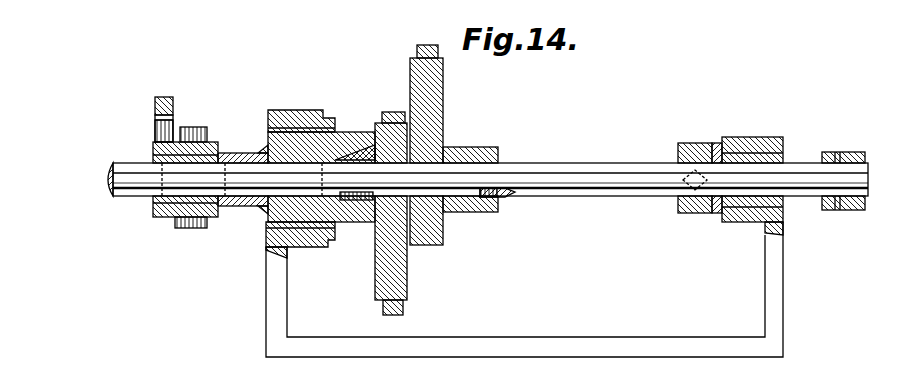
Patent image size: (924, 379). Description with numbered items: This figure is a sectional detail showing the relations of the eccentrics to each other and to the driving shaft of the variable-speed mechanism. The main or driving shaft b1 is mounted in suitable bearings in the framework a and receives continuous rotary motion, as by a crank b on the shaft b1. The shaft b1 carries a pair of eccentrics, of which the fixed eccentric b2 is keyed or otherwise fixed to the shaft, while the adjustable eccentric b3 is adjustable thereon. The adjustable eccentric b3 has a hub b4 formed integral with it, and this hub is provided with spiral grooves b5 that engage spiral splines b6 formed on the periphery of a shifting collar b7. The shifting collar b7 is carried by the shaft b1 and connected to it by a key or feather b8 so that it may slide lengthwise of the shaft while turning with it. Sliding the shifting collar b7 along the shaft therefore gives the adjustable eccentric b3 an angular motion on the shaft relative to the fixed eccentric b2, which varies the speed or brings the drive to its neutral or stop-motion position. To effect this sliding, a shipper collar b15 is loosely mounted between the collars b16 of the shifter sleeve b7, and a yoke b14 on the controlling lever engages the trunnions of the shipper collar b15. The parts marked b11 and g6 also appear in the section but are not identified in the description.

The framework a is at (600, 337).
The crank b is at (845, 211).
The main or driving shaft b1 is at (609, 165).
The fixed eccentric b2 is at (445, 122).
The adjustable eccentric b3 is at (407, 286).
The hub b4 is at (270, 221).
The spiral grooves b5 is at (357, 147).
The spiral splines b6 is at (262, 151).
The shifting collar b7 is at (225, 152).
The key or feather b8 is at (350, 201).
The end cap b11 is at (417, 50).
The yoke b14 is at (177, 220).
The shipper collar b15 is at (190, 216).
The collars b16 is at (155, 208).
The post g6 is at (158, 108).